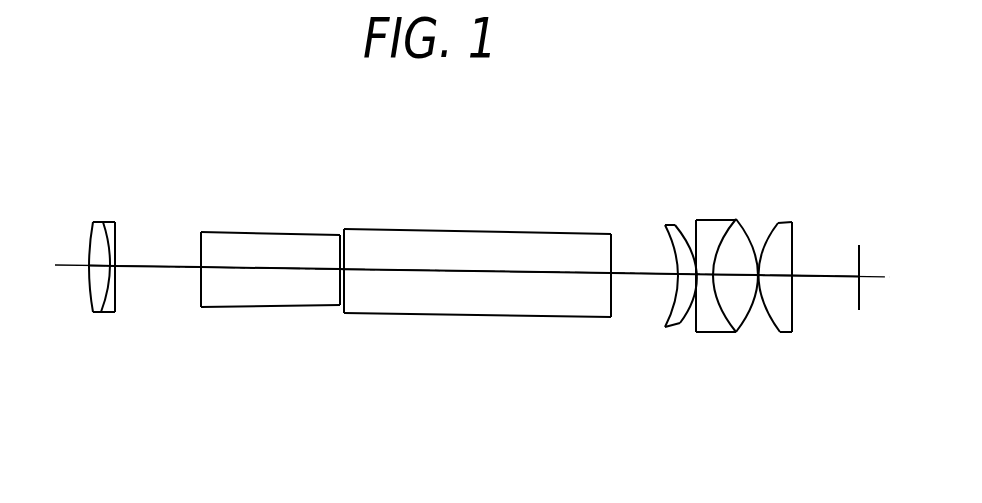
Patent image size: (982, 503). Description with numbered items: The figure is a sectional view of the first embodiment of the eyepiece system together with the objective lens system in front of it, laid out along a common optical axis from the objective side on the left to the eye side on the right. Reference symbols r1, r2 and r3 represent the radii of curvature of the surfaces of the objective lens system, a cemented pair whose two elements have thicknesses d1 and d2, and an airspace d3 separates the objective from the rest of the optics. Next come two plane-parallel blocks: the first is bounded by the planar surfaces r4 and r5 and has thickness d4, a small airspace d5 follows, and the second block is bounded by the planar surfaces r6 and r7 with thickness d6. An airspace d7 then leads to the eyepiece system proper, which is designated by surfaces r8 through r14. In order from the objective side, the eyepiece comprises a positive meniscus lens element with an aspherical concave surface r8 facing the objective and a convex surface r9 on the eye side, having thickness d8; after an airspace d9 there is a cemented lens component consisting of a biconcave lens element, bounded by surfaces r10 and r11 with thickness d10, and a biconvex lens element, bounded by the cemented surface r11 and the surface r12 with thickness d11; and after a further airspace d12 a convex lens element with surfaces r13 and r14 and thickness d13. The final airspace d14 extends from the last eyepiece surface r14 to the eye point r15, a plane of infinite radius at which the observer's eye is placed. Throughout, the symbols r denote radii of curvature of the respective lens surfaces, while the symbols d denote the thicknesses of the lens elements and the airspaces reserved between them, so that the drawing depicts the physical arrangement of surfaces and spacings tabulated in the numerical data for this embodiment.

The first surface of the objective lens system r1 is at (90, 243).
The cemented surface of the objective lens system r2 is at (103, 232).
The last surface of the objective lens system r3 is at (120, 237).
The front surface of the first plane-parallel block r4 is at (200, 243).
The rear surface of the first plane-parallel block r5 is at (337, 247).
The front surface of the second plane-parallel block r6 is at (347, 247).
The rear surface of the second plane-parallel block r7 is at (612, 248).
The objective-side surface of the positive meniscus lens element r8 is at (667, 237).
The eye-side surface of the positive meniscus lens element r9 is at (683, 233).
The objective-side surface of the biconcave lens element r10 is at (697, 223).
The cemented surface of the cemented lens component r11 is at (720, 223).
The eye-side surface of the biconvex lens element r12 is at (757, 223).
The objective-side surface of the convex lens element r13 is at (770, 223).
The eye-side surface of the convex lens element r14 is at (793, 232).
The eye point r15 is at (860, 250).
The thickness of the first objective lens element d1 is at (92, 300).
The thickness of the second objective lens element d2 is at (114, 288).
The airspace behind the objective lens system d3 is at (147, 270).
The thickness of the first plane-parallel block d4 is at (252, 270).
The airspace between the plane-parallel blocks d5 is at (342, 270).
The thickness of the second plane-parallel block d6 is at (480, 273).
The airspace in front of the eyepiece system d7 is at (645, 277).
The thickness of the positive meniscus lens element d8 is at (672, 292).
The airspace between meniscus lens and cemented component d9 is at (690, 292).
The thickness of the biconcave lens element d10 is at (707, 277).
The thickness of the biconvex lens element d11 is at (733, 280).
The airspace between cemented component and convex lens element d12 is at (757, 280).
The thickness of the convex lens element d13 is at (778, 280).
The eye relief airspace d14 is at (830, 280).